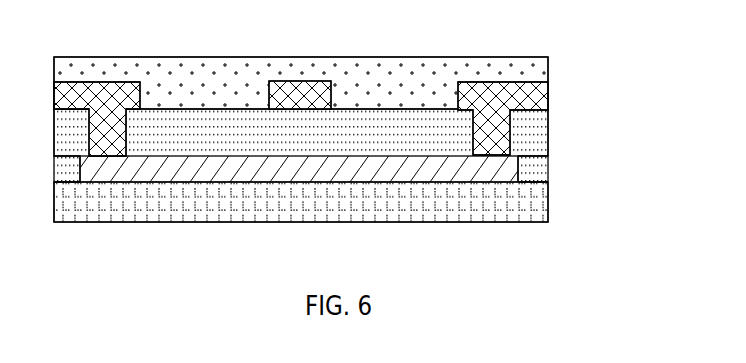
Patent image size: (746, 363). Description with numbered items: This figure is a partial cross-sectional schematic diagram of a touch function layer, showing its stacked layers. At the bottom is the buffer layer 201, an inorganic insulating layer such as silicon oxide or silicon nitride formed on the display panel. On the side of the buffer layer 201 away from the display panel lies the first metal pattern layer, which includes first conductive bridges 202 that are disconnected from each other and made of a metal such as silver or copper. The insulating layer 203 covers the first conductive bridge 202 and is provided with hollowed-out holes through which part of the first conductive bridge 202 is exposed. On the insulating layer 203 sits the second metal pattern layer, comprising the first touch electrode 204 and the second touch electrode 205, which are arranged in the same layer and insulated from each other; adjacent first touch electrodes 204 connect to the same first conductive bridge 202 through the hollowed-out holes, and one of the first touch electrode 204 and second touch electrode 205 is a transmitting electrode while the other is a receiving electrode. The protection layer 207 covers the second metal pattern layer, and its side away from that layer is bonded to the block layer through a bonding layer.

The buffer layer 201 is at (542, 208).
The first conductive bridge 202 is at (243, 156).
The insulating layer 203 is at (407, 113).
The first touch electrode 204 is at (105, 87).
The second touch electrode 205 is at (302, 90).
The protection layer 207 is at (222, 77).